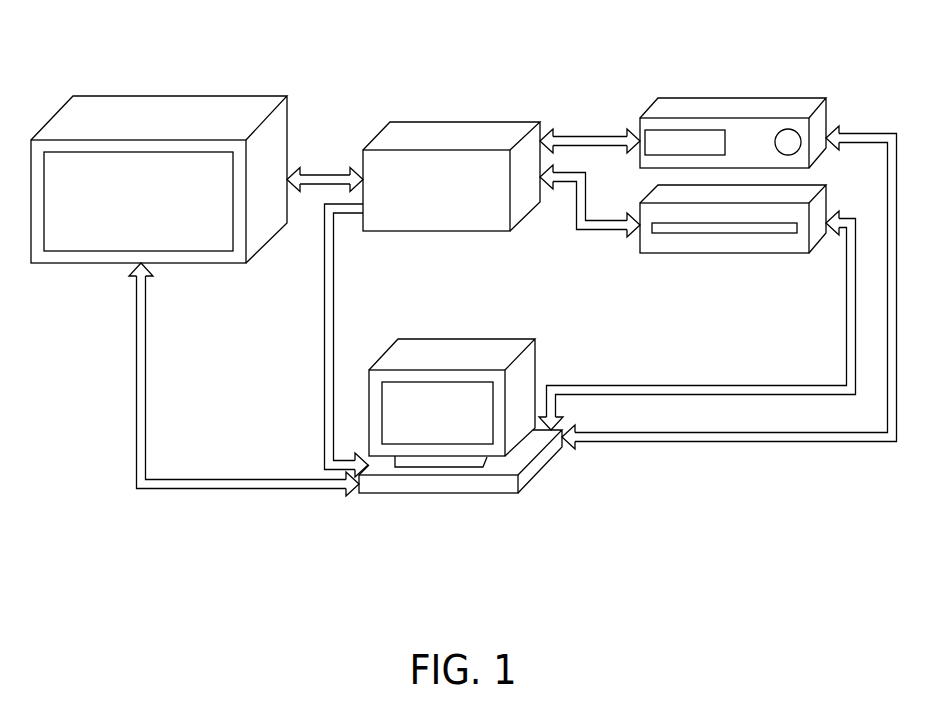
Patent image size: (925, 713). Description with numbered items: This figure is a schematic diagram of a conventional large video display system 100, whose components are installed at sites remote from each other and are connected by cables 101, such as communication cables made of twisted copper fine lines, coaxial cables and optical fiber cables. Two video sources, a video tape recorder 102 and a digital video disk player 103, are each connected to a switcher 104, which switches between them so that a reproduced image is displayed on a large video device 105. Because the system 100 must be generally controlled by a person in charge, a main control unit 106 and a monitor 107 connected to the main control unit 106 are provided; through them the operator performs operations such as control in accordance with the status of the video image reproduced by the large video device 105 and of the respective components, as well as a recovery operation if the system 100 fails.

The large video display system 100 is at (433, 47).
The cables 101 is at (343, 172).
The video tape recorder (VTR) 102 is at (826, 119).
The digital video disk player (DVD) 103 is at (826, 206).
The switcher 104 is at (449, 122).
The large video device 105 is at (288, 118).
The main control unit 106 is at (552, 456).
The monitor 107 is at (536, 366).